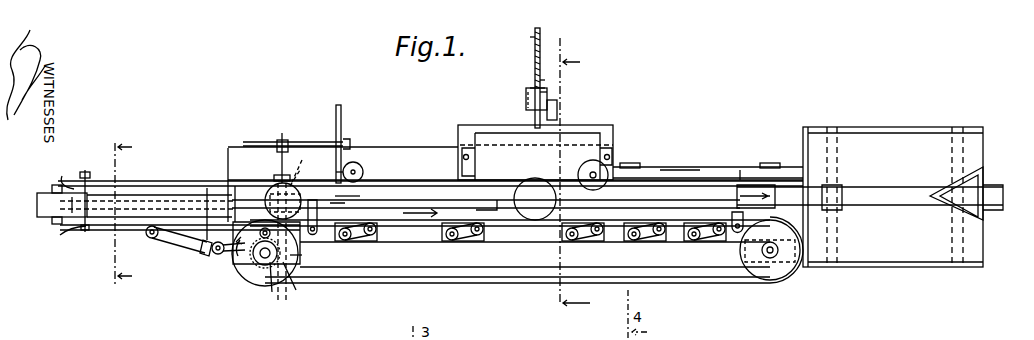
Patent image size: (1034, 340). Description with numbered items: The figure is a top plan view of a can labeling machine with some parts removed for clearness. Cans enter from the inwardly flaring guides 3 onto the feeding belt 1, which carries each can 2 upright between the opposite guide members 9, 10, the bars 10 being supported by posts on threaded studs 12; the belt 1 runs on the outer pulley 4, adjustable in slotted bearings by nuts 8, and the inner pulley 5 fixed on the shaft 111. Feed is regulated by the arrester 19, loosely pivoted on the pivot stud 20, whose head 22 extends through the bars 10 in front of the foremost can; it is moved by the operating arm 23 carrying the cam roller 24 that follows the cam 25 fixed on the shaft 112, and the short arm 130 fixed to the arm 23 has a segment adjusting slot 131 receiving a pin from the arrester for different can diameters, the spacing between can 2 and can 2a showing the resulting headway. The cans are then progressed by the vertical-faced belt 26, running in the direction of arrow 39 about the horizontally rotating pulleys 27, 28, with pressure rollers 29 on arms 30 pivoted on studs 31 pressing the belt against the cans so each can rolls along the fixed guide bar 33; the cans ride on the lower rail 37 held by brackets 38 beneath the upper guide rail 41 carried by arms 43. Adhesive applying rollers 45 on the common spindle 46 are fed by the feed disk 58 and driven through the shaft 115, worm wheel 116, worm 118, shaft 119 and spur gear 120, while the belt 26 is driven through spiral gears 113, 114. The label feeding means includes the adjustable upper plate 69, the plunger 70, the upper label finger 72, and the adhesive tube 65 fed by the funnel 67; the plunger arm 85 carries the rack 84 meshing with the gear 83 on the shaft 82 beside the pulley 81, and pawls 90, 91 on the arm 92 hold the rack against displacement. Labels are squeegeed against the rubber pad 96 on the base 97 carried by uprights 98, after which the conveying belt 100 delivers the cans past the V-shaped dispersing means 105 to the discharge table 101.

The feeding belt 1 is at (106, 212).
The can 2 is at (284, 185).
The can 2a is at (535, 186).
The inwardly flaring guides 3 is at (62, 176).
The outwardly disposed pulley 4 is at (50, 210).
The inwardly disposed pulley 5 is at (297, 188).
The nuts 8 is at (122, 210).
The guide member 9 is at (151, 181).
The guide bars 10 is at (134, 231).
The threaded studs 12 is at (85, 235).
The arrester 19 is at (182, 250).
The pivot stud 20 is at (234, 200).
The head 22 is at (150, 238).
The operating arm 23 is at (218, 254).
The cam roller 24 is at (270, 236).
The cam 25 is at (260, 263).
The belt 26 is at (355, 285).
The pulley 27 is at (265, 287).
The pulley 28 is at (778, 278).
The pressure rollers 29 is at (368, 240).
The arms 30 is at (367, 236).
The studs 31 is at (343, 241).
The fixed guide bar 33 is at (390, 178).
The lower rail 37 is at (393, 200).
The brackets 38 is at (348, 197).
The arrow 39 is at (425, 208).
The upper guide rail 41 is at (361, 201).
The arms 43 is at (322, 213).
The adhesive applying rollers 45 is at (357, 165).
The common spindle 46 is at (343, 172).
The feed disk 58 is at (336, 116).
The tube 65 is at (607, 178).
The funnel 67 is at (612, 152).
The adjustable upper plate 69 is at (478, 156).
The plunger 70 is at (586, 133).
The upper label finger 72 is at (490, 171).
The pulley 81 is at (557, 108).
The shaft 82 is at (527, 108).
The gear 83 is at (526, 98).
The rack 84 is at (541, 42).
The arm 85 is at (534, 37).
The pawl 90 is at (531, 88).
The pawl 91 is at (545, 80).
The arm 92 is at (547, 92).
The rubber pad 96 is at (670, 172).
The base 97 is at (748, 170).
The uprights 98 is at (636, 163).
The conveying belt 100 is at (918, 186).
The discharge table 101 is at (912, 150).
The V-shaped dispersing means 105 is at (975, 175).
The shaft 111 is at (288, 280).
The common shaft 112 is at (274, 300).
The spiral gear 113 is at (276, 284).
The spiral gear 114 is at (298, 265).
The shaft 115 is at (310, 142).
The worm wheel 116 is at (282, 133).
The worm 118 is at (278, 142).
The shaft 119 is at (280, 172).
The spur gear 120 is at (296, 176).
The short arm 130 is at (206, 257).
The segment adjusting slot 131 is at (206, 240).